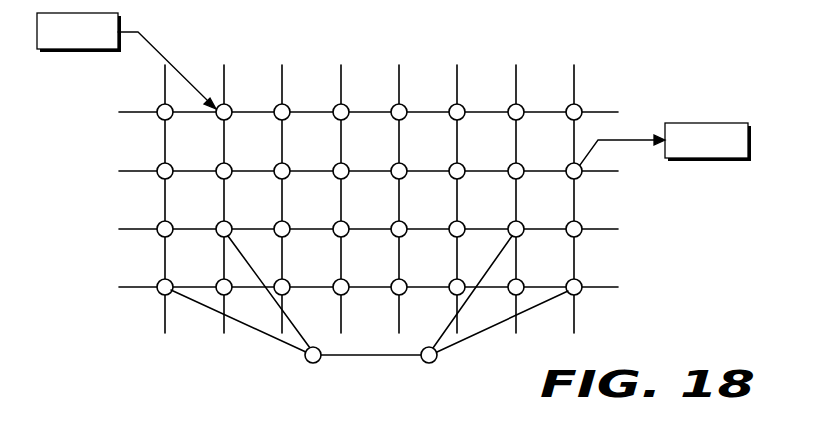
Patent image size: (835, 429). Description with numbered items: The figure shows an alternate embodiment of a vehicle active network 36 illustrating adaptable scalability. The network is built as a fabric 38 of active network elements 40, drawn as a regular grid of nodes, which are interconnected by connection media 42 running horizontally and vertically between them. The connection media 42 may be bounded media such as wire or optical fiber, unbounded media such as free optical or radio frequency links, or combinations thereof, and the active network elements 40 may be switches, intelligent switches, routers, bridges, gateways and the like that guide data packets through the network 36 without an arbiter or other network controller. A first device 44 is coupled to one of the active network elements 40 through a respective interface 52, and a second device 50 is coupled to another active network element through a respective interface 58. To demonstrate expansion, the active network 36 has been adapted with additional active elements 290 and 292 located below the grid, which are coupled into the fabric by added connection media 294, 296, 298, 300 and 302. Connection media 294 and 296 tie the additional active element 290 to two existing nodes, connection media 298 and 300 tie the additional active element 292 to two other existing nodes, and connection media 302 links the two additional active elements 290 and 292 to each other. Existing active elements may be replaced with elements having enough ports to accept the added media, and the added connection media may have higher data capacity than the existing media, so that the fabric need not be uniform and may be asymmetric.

The active network 36 is at (612, 316).
The fabric 38 is at (460, 67).
The active network elements 40 is at (162, 118).
The connection media 42 is at (194, 173).
The device 44 is at (77, 53).
The device 50 is at (708, 160).
The interface 52 is at (153, 43).
The interface 58 is at (645, 146).
The additional active element 290 is at (313, 364).
The additional active element 292 is at (429, 364).
The connection media 294 is at (253, 333).
The connection media 296 is at (294, 336).
The connection media 298 is at (446, 332).
The connection media 300 is at (491, 334).
The connection media 302 is at (371, 357).